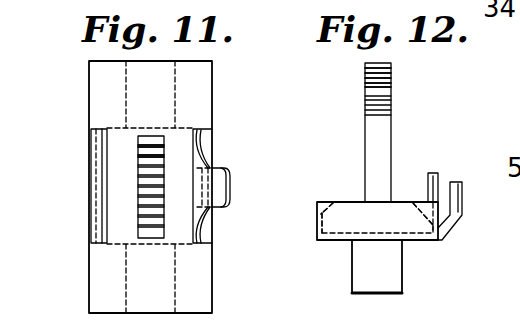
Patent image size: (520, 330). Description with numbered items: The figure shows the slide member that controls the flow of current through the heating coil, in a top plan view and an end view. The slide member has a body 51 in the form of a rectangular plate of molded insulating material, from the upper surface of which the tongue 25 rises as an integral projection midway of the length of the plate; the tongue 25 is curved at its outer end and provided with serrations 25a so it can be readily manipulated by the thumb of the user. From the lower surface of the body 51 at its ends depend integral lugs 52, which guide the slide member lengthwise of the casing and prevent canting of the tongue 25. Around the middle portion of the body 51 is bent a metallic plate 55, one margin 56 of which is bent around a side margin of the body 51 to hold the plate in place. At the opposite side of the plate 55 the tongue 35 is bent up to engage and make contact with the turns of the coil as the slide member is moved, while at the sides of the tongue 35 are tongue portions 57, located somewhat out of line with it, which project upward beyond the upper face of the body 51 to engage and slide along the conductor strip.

In FIG. 11, the tongue 25 is at (147, 192).
In FIG. 12, the tongue 25 is at (378, 145).
In FIG. 11, the serrations 25a is at (148, 192).
In FIG. 12, the serrations 25a is at (378, 92).
In FIG. 11, the tongue 35 is at (230, 187).
In FIG. 12, the tongue 35 is at (458, 197).
In FIG. 11, the body 51 is at (195, 86).
In FIG. 12, the body 51 is at (343, 223).
In FIG. 11, the lugs 52 is at (132, 84).
In FIG. 12, the lugs 52 is at (367, 270).
In FIG. 12, the metallic plate 55 is at (418, 238).
In FIG. 11, the margin 56 is at (100, 223).
In FIG. 12, the margin 56 is at (330, 205).
In FIG. 11, the tongue portions 57 is at (208, 147).
In FIG. 12, the tongue portions 57 is at (438, 176).